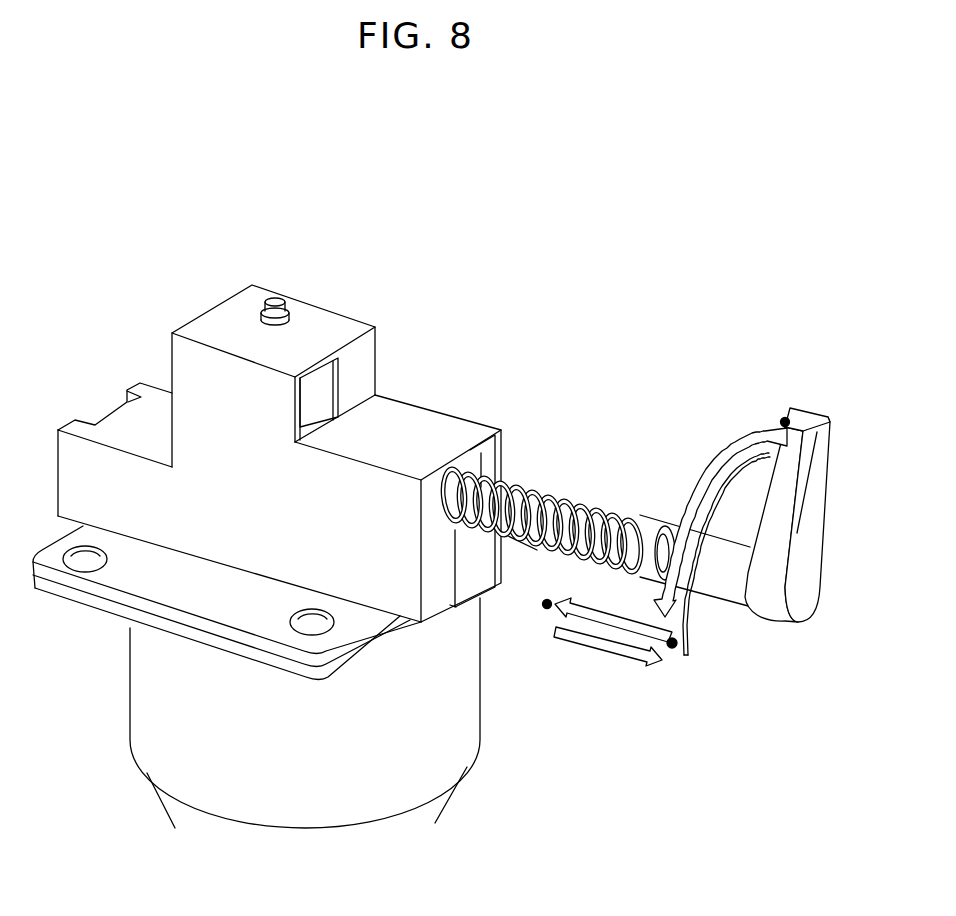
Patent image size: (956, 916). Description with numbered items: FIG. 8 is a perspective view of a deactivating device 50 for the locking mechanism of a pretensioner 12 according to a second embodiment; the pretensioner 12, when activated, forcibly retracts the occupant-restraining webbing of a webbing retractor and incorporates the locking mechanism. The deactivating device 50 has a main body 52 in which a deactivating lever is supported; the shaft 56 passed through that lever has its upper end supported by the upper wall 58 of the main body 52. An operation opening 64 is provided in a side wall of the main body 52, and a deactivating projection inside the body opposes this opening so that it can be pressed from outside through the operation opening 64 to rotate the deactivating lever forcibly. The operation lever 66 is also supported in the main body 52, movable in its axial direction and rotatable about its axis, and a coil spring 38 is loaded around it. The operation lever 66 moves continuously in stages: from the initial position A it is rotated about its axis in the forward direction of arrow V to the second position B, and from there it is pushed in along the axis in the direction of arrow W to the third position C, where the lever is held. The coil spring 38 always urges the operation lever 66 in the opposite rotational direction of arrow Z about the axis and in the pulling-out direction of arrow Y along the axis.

The pretensioner 12 is at (150, 707).
The coil spring 38 is at (583, 498).
The deactivating device 50 is at (436, 337).
The main body 52 is at (197, 363).
The shaft 56 is at (277, 302).
The upper wall 58 is at (327, 320).
The operation opening 64 is at (340, 388).
The operation lever 66 is at (780, 618).
The initial position A is at (783, 418).
The second position B is at (676, 648).
The third position C is at (545, 606).
The forward rotation direction V is at (707, 477).
The pushing-in direction W is at (612, 622).
The pulling-out direction Y is at (625, 657).
The opposite rotation direction Z is at (737, 483).